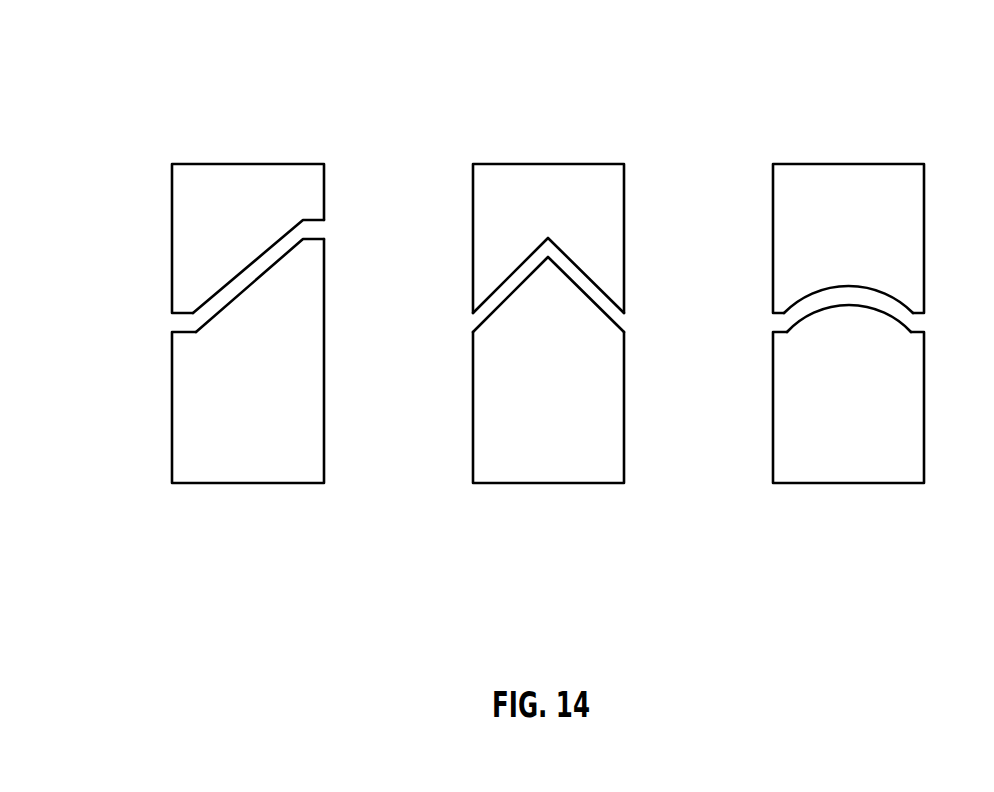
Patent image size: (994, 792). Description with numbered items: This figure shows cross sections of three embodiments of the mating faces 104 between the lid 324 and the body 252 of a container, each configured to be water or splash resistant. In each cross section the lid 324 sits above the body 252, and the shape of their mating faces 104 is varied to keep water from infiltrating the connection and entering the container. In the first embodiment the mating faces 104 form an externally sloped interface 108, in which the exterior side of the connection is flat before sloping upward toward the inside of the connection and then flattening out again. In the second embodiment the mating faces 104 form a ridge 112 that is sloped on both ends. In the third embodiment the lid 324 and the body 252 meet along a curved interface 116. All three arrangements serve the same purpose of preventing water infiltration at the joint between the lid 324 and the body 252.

The mating faces 104 is at (126, 51).
The lid 324 is at (245, 164).
The body 252 is at (248, 483).
The externally sloped interface 108 is at (325, 230).
The ridge 112 is at (473, 326).
The curved interface 116 is at (773, 326).